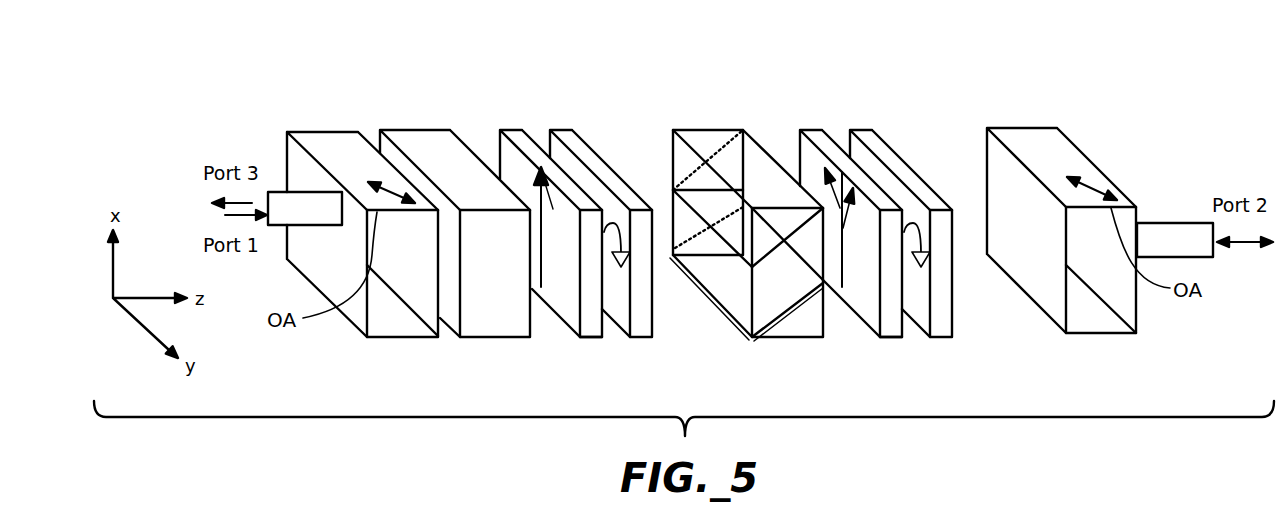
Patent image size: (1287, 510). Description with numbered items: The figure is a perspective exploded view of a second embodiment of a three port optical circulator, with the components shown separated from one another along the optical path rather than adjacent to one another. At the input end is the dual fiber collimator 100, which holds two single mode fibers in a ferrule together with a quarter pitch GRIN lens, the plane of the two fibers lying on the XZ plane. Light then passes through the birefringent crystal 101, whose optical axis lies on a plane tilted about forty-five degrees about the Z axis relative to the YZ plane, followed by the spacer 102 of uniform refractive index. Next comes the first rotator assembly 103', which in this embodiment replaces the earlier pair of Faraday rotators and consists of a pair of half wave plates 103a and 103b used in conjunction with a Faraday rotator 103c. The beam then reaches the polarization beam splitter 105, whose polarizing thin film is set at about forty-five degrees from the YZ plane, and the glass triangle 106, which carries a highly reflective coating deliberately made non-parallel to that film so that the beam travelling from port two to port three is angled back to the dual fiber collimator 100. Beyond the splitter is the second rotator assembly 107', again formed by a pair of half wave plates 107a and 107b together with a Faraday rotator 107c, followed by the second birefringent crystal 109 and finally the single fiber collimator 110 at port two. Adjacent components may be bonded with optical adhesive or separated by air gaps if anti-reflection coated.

The dual fiber collimator 100 is at (283, 191).
The birefringent crystal 101 is at (327, 130).
The spacer 102 is at (433, 130).
The first half wave plate and Faraday rotator assembly 103' is at (576, 202).
The half wave plate 103a is at (510, 130).
The half wave plate 103b is at (590, 338).
The Faraday rotator 103c is at (558, 128).
The polarization beam splitter 105 is at (715, 148).
The glass triangle 106 is at (790, 315).
The second half wave plate and Faraday rotator assembly 107' is at (889, 202).
The half wave plate 107a is at (810, 130).
The half wave plate 107b is at (890, 338).
The Faraday rotator 107c is at (858, 128).
The birefringent crystal 109 is at (1023, 127).
The single fiber collimator 110 is at (1177, 223).